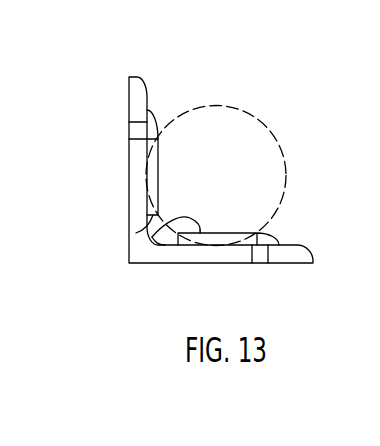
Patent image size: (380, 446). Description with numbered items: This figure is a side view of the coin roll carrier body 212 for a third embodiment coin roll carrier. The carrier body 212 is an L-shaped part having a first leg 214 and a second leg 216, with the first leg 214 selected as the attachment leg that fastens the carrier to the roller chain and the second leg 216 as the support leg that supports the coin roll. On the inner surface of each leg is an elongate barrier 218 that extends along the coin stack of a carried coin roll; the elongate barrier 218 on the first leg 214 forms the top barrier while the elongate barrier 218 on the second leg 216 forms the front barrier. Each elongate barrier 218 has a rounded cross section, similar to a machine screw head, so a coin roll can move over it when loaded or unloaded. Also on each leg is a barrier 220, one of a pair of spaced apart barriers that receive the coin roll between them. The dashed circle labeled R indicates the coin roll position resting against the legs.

The coin roll carrier body 212 is at (182, 192).
The first leg 214 is at (128, 102).
The second leg 216 is at (192, 263).
The elongate barrier 218 is at (160, 105).
The barrier 220 is at (152, 237).
The radius of the tube R is at (262, 120).